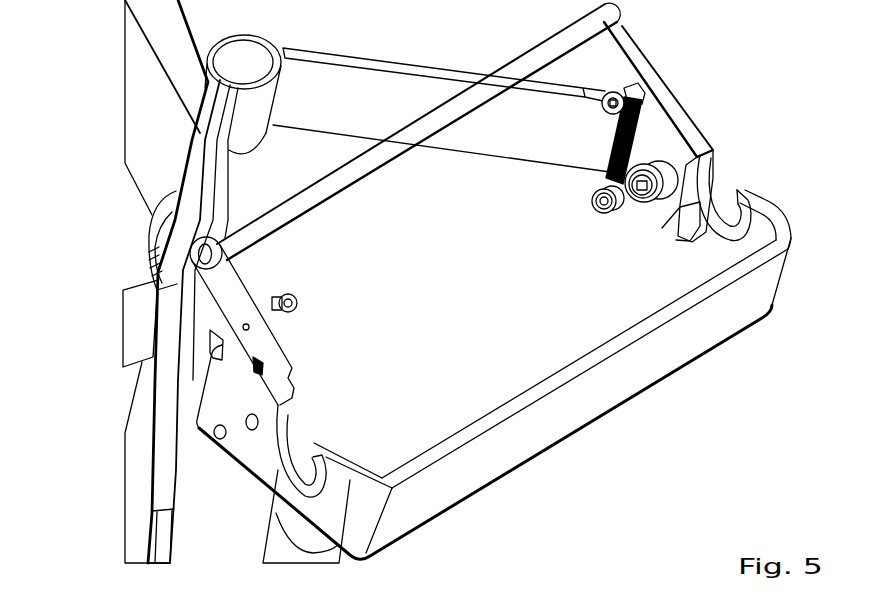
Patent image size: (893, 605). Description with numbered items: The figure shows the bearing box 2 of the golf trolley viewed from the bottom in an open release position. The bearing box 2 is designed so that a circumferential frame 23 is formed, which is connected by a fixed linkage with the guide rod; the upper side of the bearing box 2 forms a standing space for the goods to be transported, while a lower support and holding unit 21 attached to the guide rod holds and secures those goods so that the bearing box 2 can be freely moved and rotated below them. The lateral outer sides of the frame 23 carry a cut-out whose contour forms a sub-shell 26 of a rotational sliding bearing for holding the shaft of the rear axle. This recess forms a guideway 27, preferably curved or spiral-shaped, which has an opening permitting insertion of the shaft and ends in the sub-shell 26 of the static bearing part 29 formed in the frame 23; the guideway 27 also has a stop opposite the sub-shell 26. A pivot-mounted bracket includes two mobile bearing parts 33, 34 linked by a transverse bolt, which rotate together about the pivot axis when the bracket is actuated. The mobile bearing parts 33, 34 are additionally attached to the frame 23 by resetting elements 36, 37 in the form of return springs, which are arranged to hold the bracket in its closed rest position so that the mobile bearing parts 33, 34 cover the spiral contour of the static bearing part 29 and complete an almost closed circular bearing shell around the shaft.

The bearing box 2 is at (474, 503).
The support and holding unit 21 is at (163, 458).
The circumferential frame 23 is at (633, 367).
The sub-shell 26 is at (768, 228).
The guideway 27 is at (723, 177).
The static bearing part 29 is at (710, 223).
The mobile bearing part 33 is at (683, 213).
The mobile bearing part 34 is at (300, 445).
The resetting element 36 is at (257, 369).
The resetting element 37 is at (638, 138).